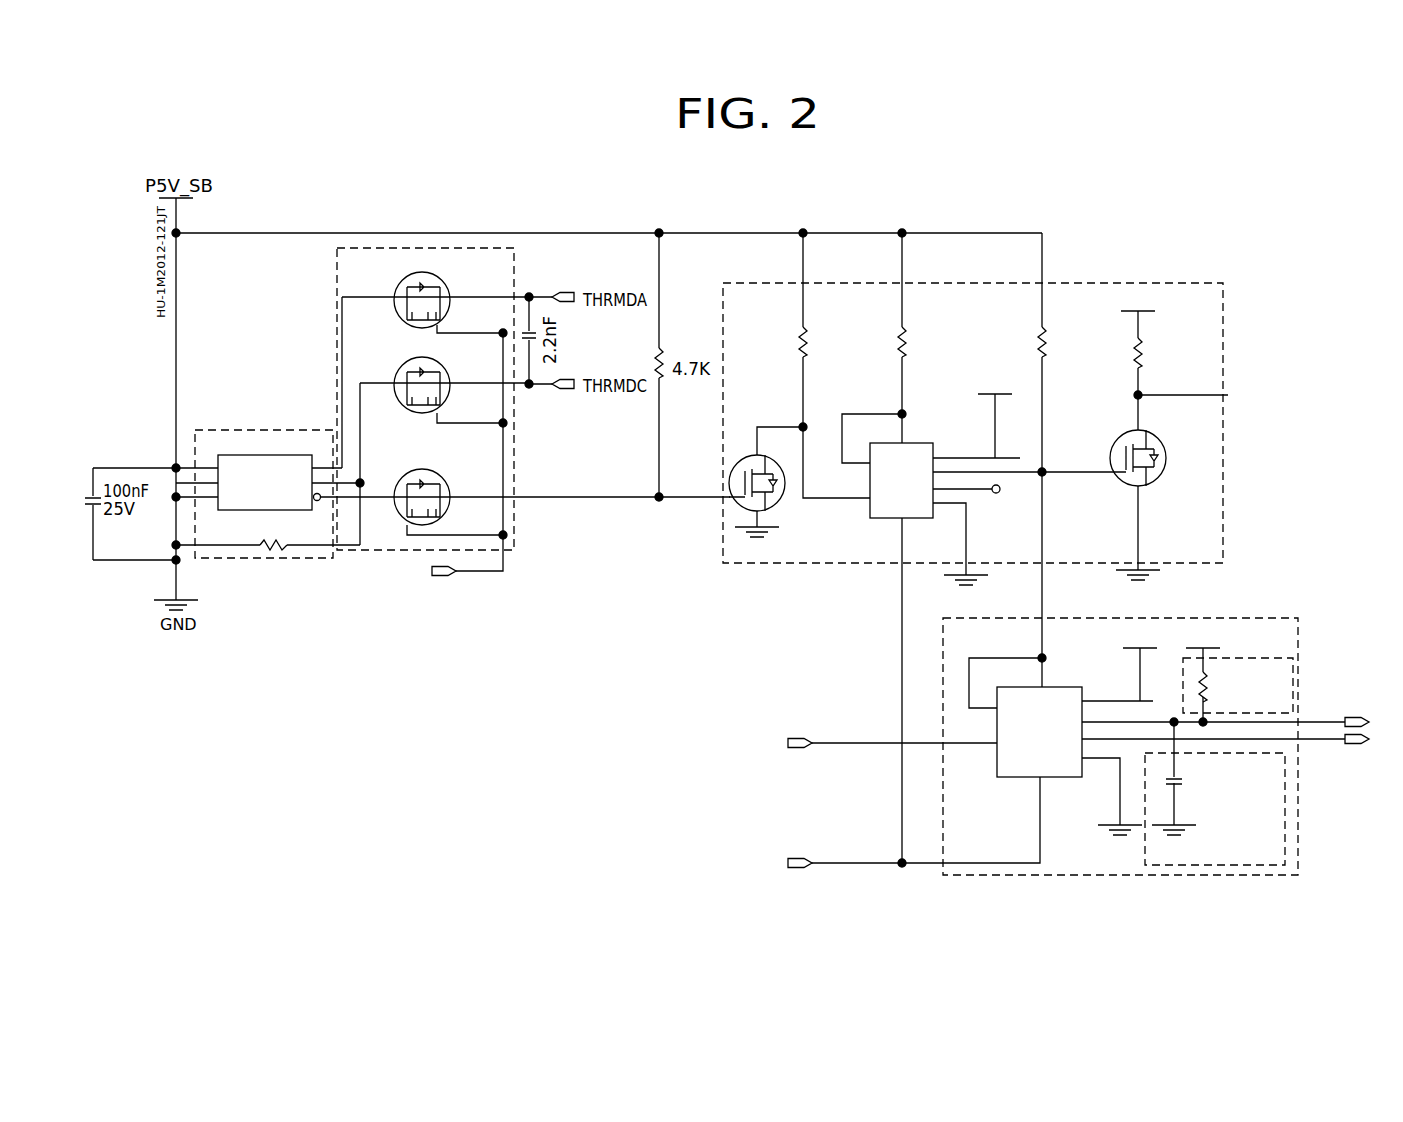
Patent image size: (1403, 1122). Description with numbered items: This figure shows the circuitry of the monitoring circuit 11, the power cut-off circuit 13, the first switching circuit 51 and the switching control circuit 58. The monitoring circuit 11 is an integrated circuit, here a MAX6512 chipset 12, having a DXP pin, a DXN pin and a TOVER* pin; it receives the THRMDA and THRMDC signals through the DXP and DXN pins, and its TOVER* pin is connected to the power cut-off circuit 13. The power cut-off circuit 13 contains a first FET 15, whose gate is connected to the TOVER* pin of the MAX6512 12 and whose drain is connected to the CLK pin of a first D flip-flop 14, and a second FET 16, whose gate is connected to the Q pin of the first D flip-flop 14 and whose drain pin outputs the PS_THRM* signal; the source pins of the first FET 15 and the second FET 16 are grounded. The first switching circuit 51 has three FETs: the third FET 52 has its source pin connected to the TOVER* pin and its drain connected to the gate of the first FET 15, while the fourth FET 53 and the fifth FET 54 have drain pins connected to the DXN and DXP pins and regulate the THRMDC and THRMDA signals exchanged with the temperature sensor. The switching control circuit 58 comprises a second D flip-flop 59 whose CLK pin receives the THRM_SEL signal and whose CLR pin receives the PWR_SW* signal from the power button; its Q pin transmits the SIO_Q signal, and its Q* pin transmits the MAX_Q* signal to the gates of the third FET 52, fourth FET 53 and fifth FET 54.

The monitoring circuit 11 is at (246, 560).
The MAX6512 chipset 12 is at (296, 510).
The power cut-off circuit 13 is at (1165, 283).
The first D flip-flop 14 is at (935, 425).
The first FET 15 is at (735, 503).
The second FET 16 is at (1165, 478).
The first switching circuit 51 is at (458, 248).
The third FET 52 is at (445, 478).
The fourth FET 53 is at (392, 378).
The fifth FET 54 is at (392, 292).
The switching control circuit 58 is at (1298, 840).
The second D flip-flop 59 is at (1062, 777).